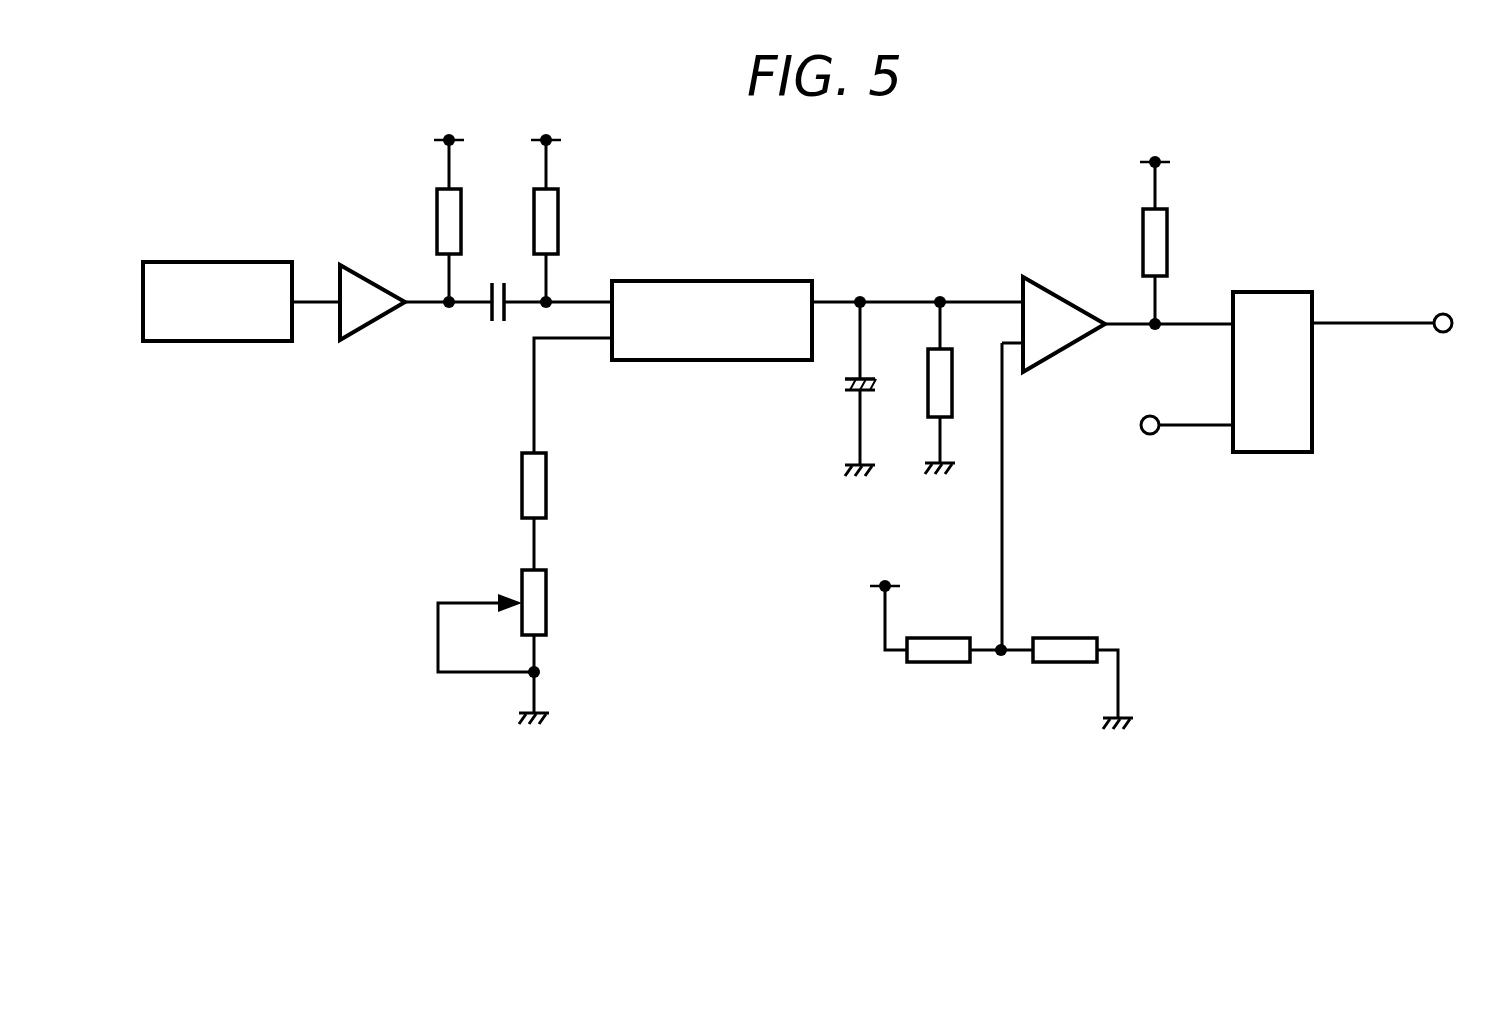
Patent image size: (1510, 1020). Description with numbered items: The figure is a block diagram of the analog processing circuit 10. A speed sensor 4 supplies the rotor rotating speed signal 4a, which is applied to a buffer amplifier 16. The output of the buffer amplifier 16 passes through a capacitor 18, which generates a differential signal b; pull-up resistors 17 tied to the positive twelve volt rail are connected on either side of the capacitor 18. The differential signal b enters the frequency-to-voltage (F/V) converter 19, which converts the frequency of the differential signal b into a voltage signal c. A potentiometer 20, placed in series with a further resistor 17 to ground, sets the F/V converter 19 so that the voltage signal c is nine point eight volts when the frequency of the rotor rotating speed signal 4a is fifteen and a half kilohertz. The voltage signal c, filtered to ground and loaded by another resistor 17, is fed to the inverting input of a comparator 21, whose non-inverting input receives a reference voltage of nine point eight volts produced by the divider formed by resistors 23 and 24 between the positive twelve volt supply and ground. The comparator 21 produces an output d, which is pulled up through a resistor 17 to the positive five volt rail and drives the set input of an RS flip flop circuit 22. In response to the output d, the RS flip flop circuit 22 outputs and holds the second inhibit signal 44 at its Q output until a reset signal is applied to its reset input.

The analog processing circuit 10 is at (1248, 124).
The speed sensor 4 is at (160, 262).
The rotor rotating speed signal 4a is at (314, 300).
The buffer amplifier 16 is at (355, 266).
The resistor 17 is at (462, 210).
The capacitor 18 is at (496, 283).
The frequency-to-voltage (F/V) converter 19 is at (676, 281).
The potentiometer 20 is at (547, 606).
The comparator 21 is at (1033, 280).
The RS flip flop circuit 22 is at (1243, 292).
The resistor 23 is at (915, 637).
The resistor 24 is at (1040, 637).
The second inhibit signal 44 is at (1366, 322).
The differential signal b is at (579, 301).
The voltage signal c is at (831, 301).
The comparator output d is at (1118, 321).